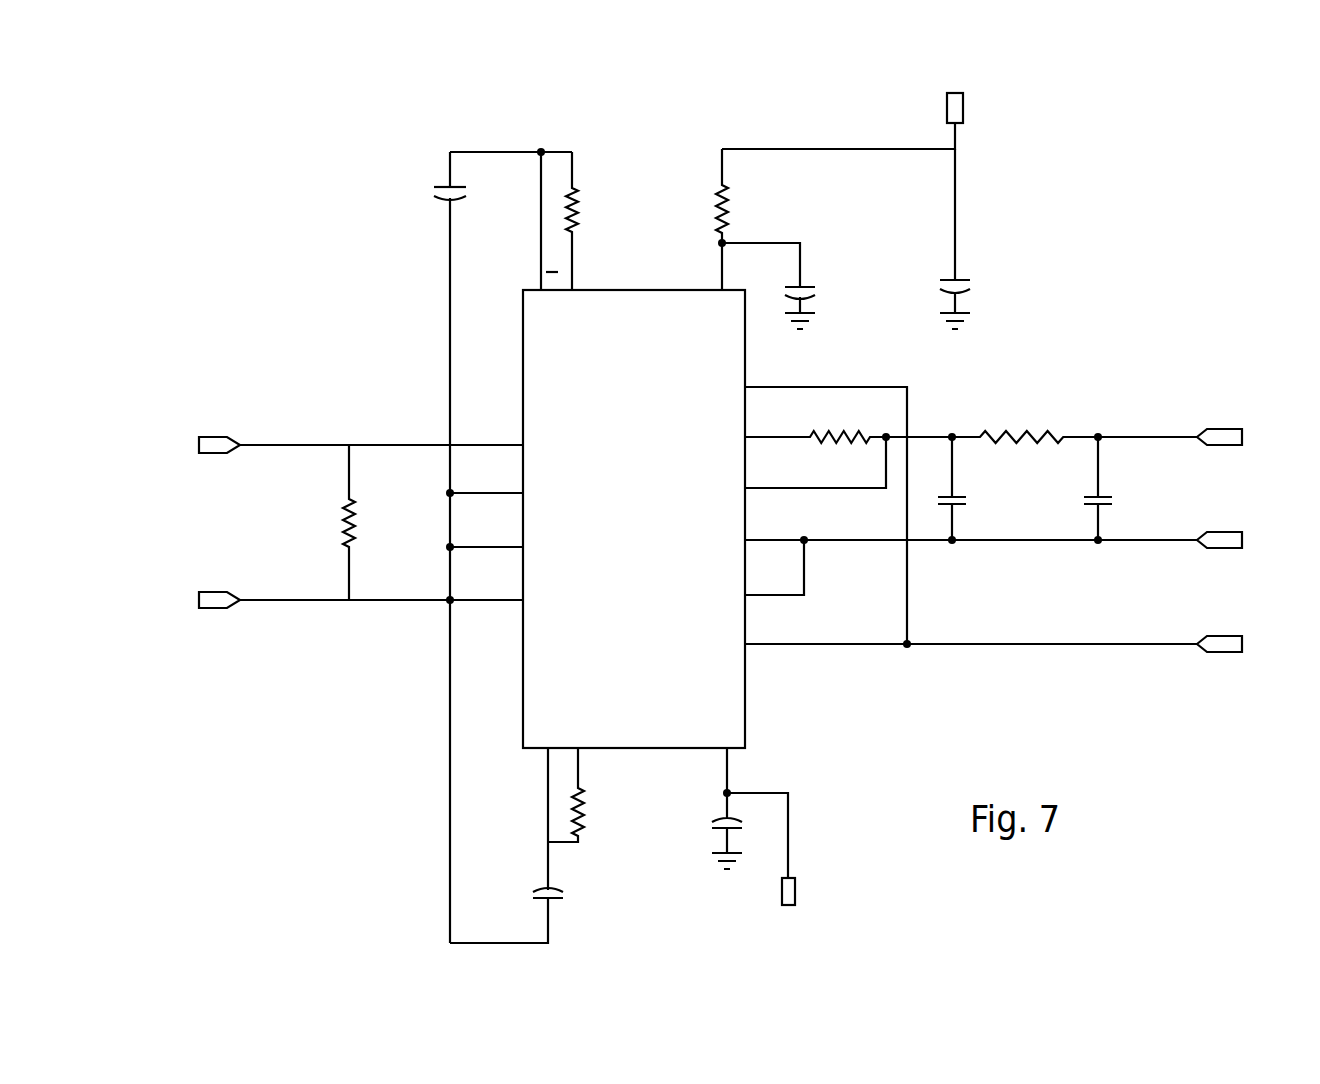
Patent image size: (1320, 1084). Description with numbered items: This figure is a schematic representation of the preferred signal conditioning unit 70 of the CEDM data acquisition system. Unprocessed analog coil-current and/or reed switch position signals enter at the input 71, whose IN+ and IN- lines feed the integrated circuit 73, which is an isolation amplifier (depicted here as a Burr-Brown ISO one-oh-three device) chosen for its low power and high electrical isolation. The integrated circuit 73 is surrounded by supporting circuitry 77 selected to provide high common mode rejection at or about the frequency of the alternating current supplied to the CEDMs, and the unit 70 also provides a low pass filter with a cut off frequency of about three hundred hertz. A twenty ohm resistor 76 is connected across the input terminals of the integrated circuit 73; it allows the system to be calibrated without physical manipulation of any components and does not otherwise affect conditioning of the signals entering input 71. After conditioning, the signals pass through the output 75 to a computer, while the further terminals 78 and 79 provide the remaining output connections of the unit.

The signal conditioning unit 70 is at (1026, 201).
The input 71 is at (294, 448).
The integrated circuit 73 is at (748, 732).
The output 75 is at (1174, 433).
The resistor 76 is at (373, 522).
The supporting circuitry 77 is at (655, 170).
The negative output OUT- 78 is at (1175, 536).
The sync output 79 is at (1124, 643).